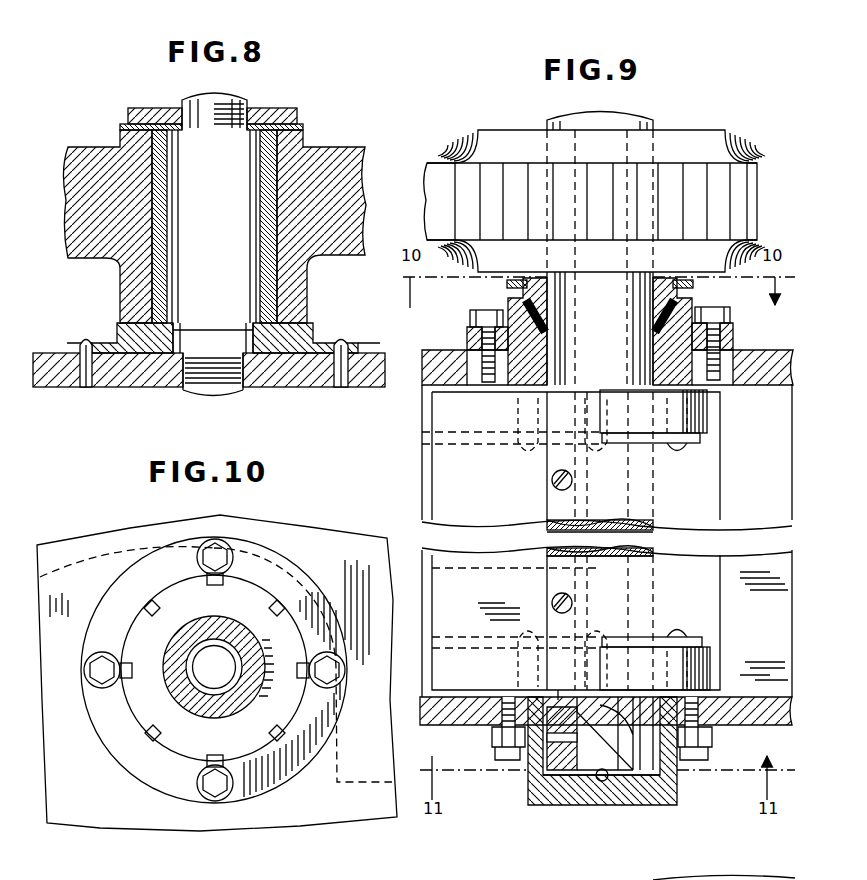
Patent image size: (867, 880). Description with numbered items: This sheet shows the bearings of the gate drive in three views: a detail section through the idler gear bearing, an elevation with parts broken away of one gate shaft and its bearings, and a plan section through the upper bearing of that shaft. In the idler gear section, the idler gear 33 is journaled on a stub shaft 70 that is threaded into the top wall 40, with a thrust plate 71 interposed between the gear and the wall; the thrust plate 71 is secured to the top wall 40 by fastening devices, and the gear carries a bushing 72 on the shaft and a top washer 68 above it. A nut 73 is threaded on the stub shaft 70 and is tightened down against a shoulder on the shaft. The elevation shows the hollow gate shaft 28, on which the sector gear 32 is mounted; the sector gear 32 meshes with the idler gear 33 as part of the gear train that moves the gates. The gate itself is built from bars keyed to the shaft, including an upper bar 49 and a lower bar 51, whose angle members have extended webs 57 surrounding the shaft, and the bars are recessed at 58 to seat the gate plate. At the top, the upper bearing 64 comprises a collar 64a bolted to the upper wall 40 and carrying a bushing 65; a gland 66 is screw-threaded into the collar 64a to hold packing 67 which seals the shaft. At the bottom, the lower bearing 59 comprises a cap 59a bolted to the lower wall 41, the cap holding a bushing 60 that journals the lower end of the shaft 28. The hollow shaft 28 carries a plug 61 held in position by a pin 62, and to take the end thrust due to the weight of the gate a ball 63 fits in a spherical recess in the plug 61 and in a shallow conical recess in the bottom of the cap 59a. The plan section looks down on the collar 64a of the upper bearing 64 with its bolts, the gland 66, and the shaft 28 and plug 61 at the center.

In FIG. 9, the shaft 28 is at (618, 127).
In FIG. 10, the shaft 28 is at (255, 652).
In FIG. 9, the sector gear 32 is at (735, 183).
In FIG. 8, the idler gear 33 is at (92, 163).
In FIG. 8, the top wall 40 is at (140, 373).
In FIG. 9, the top wall 40 is at (430, 368).
In FIG. 10, the top wall 40 is at (158, 812).
In FIG. 9, the lower wall 41 is at (472, 720).
In FIG. 9, the upper bar 49 is at (695, 415).
In FIG. 9, the lower bar 51 is at (693, 667).
In FIG. 9, the extended web 57 is at (695, 437).
In FIG. 9, the recess 58 is at (602, 415).
In FIG. 9, the lower bearing 59 is at (682, 795).
In FIG. 9, the cap 59a is at (535, 792).
In FIG. 9, the bushing 60 is at (543, 762).
In FIG. 9, the plug 61 is at (620, 776).
In FIG. 10, the plug 61 is at (212, 682).
In FIG. 9, the pin 62 is at (557, 692).
In FIG. 9, the ball 63 is at (597, 781).
In FIG. 9, the upper bearing 64 is at (758, 319).
In FIG. 10, the upper bearing 64 is at (118, 722).
In FIG. 9, the collar 64a is at (472, 345).
In FIG. 9, the bushing 65 is at (542, 362).
In FIG. 9, the gland 66 is at (510, 282).
In FIG. 10, the gland 66 is at (233, 602).
In FIG. 9, the packing 67 is at (680, 292).
In FIG. 8, the top washer 68 is at (302, 127).
In FIG. 8, the stub shaft 70 is at (214, 244).
In FIG. 8, the thrust plate 71 is at (128, 337).
In FIG. 8, the bushing 72 is at (157, 268).
In FIG. 8, the nut 73 is at (283, 118).